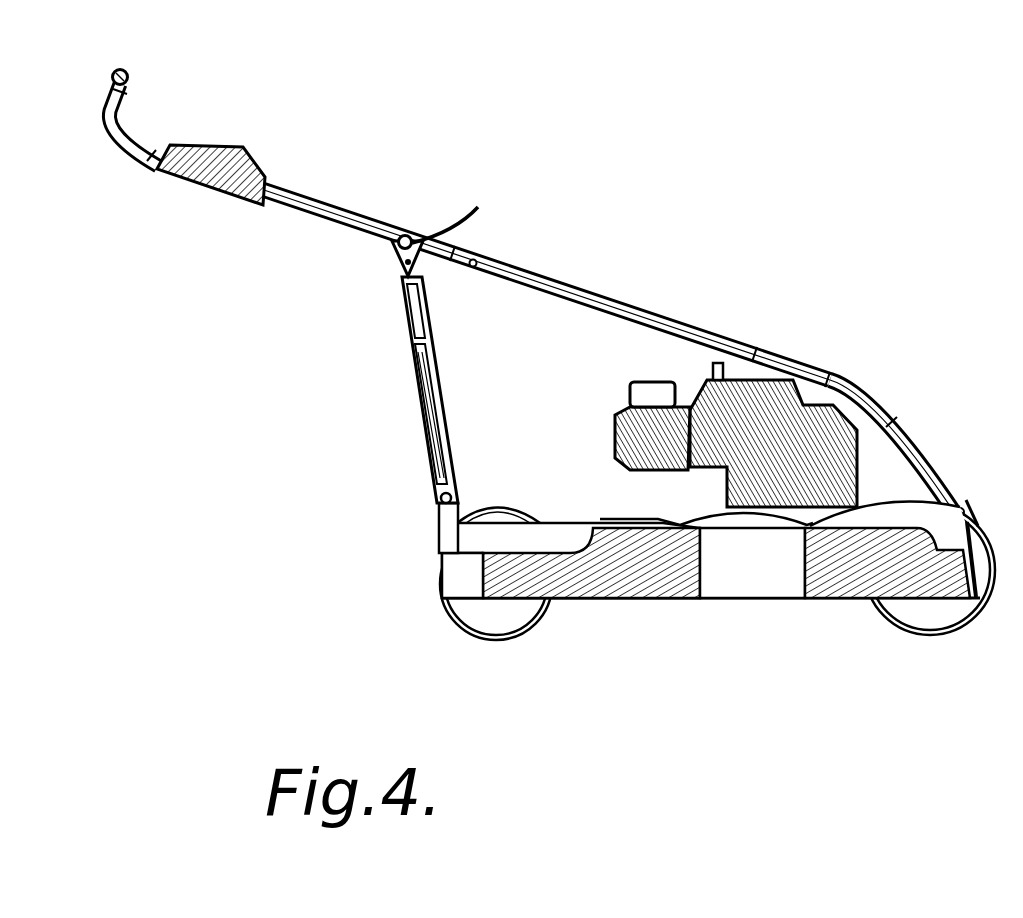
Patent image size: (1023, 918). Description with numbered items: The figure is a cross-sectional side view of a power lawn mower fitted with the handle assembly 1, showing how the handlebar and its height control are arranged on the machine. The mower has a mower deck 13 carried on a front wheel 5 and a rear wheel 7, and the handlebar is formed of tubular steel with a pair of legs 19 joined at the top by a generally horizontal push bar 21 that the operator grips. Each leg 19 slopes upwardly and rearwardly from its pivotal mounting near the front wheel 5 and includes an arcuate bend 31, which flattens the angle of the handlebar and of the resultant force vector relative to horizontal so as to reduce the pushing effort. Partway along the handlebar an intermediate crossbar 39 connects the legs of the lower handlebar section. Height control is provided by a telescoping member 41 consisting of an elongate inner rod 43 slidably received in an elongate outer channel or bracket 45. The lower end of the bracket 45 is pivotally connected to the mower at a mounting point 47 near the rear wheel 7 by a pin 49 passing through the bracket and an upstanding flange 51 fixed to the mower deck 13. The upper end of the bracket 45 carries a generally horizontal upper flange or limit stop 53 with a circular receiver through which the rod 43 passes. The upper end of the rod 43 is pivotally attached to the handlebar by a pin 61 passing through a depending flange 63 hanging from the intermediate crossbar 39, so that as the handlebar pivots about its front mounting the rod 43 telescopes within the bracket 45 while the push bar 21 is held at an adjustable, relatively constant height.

The handle assembly 1 is at (762, 313).
The front wheel 5 is at (903, 632).
The rear wheel 7 is at (537, 632).
The mower deck 13 is at (440, 570).
The leg 19 is at (632, 304).
The push bar 21 is at (130, 72).
The arcuate bend 31 is at (870, 393).
The intermediate crossbar 39 is at (407, 236).
The telescoping member 41 is at (466, 460).
The rod 43 is at (427, 298).
The bracket 45 is at (442, 378).
The mounting point 47 is at (476, 498).
The pin 49 is at (440, 500).
The upstanding flange 51 is at (446, 527).
The upper flange or limit stop 53 is at (478, 261).
The pin 61 is at (400, 258).
The depending flange 63 is at (463, 206).